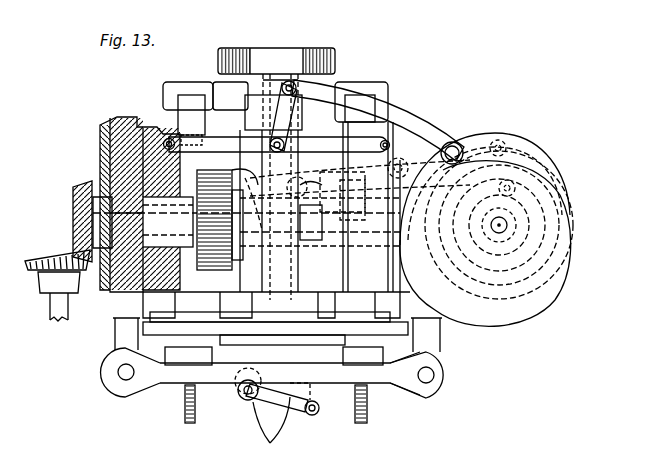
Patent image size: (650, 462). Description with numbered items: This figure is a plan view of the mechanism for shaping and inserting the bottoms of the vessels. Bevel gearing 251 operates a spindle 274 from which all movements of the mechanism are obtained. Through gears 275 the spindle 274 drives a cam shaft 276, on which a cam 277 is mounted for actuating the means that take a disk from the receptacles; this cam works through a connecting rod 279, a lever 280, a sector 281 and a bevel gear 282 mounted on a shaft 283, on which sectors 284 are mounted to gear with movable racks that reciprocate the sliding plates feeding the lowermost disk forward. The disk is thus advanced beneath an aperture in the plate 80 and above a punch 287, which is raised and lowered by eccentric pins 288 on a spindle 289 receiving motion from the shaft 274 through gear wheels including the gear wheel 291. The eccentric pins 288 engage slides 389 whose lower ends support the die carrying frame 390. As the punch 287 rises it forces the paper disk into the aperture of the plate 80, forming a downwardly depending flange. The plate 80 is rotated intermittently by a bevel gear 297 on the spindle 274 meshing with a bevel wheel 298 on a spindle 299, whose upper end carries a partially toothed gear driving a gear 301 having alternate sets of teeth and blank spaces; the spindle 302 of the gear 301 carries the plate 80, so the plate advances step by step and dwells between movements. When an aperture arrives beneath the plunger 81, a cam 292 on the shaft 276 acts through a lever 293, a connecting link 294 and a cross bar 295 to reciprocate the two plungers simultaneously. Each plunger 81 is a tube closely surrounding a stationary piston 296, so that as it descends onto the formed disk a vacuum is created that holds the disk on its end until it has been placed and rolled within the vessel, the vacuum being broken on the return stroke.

The plate 80 is at (168, 342).
The plunger 81 is at (187, 126).
The gearing 251 is at (57, 272).
The spindle 274 is at (146, 236).
The gears 275 is at (503, 272).
The cam shaft 276 is at (506, 225).
The cam 277 is at (537, 143).
The connecting rod 279 is at (300, 344).
The lever 280 is at (303, 411).
The sector 281 is at (266, 436).
The bevel gear 282 is at (291, 437).
The shaft 283 is at (247, 400).
The sectors 284 is at (184, 414).
The punch 287 is at (274, 356).
The eccentric pins 288 is at (85, 204).
The spindle 289 is at (120, 204).
The gear wheel 291 is at (205, 272).
The cam 292 is at (550, 306).
The lever 293 is at (400, 124).
The connecting link 294 is at (285, 115).
The cross bar 295 is at (277, 146).
The stationary piston 296 is at (168, 138).
The bevel gear 297 is at (318, 241).
The bevel wheel 298 is at (258, 183).
The spindle 299 is at (258, 88).
The gear 301 is at (279, 54).
The spindle 302 is at (260, 317).
The slides 389 is at (114, 342).
The die carrying frame 390 is at (271, 381).